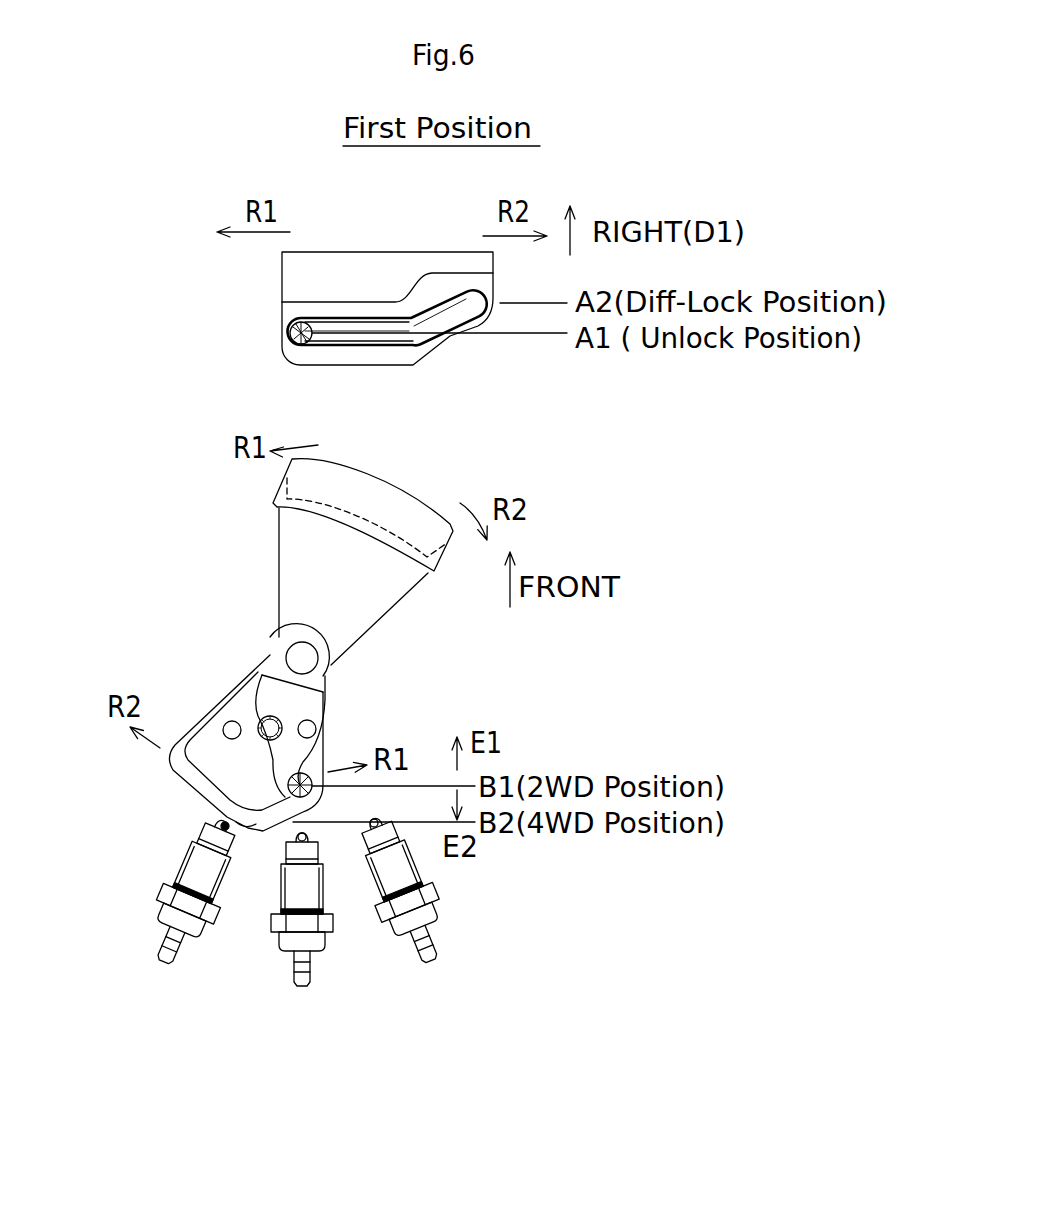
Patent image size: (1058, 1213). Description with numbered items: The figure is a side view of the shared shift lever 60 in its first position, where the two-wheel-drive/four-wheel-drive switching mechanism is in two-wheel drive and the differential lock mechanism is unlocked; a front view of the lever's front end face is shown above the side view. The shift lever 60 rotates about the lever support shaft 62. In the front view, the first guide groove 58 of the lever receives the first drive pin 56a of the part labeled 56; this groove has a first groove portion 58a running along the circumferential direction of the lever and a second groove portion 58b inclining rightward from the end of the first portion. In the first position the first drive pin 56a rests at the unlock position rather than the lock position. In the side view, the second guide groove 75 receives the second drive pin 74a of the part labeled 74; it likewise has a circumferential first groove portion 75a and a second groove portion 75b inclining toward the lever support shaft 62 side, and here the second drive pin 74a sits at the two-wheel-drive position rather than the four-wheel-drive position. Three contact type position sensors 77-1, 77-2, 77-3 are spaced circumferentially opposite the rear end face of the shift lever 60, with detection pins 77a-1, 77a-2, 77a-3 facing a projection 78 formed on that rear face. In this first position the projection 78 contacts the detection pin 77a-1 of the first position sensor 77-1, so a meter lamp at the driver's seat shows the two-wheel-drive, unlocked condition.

The guide plate 56 is at (387, 308).
The first drive pin 56a is at (290, 334).
The first guide groove 58 is at (420, 364).
The first groove portion 58a is at (360, 336).
The second groove portion 58b is at (423, 318).
The shift lever 60 is at (403, 656).
The lever support shaft 62 is at (293, 658).
The fastener 74 is at (300, 785).
The second drive pin 74a is at (316, 727).
The second guide groove 75 is at (190, 772).
The first groove portion 75a is at (207, 784).
The second groove portion 75b is at (262, 720).
The first position sensor 77-1 is at (198, 912).
The second position sensor 77-2 is at (308, 934).
The third position sensor 77-3 is at (357, 835).
The detection pin 77a-1 is at (222, 822).
The detection pin 77a-2 is at (315, 840).
The detection pin 77a-3 is at (413, 908).
The projection 78 is at (246, 826).